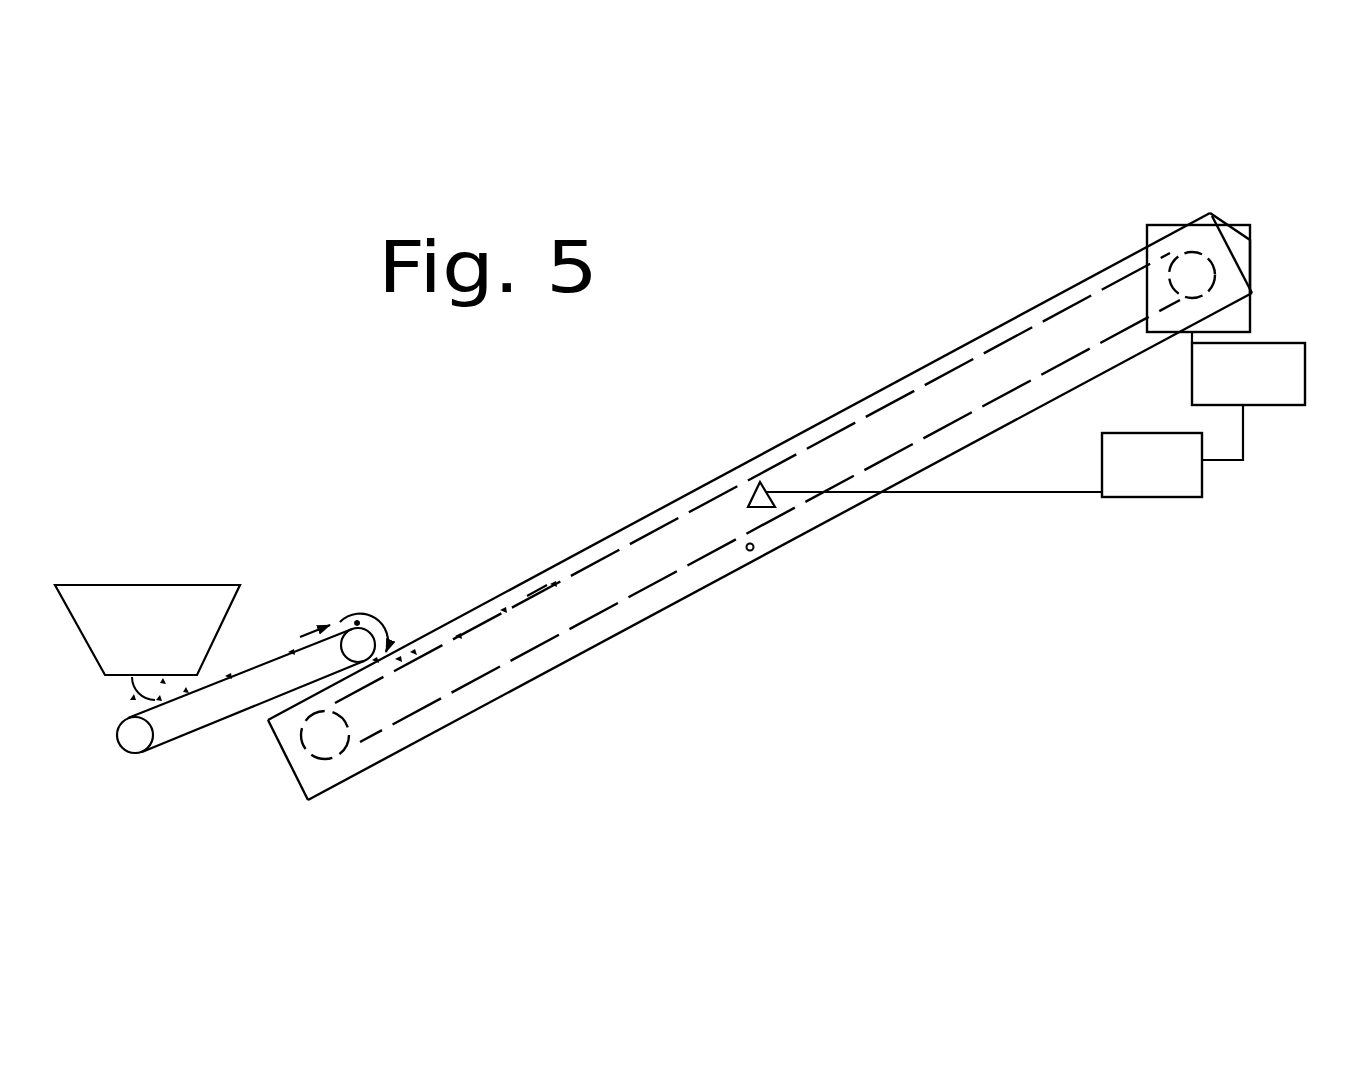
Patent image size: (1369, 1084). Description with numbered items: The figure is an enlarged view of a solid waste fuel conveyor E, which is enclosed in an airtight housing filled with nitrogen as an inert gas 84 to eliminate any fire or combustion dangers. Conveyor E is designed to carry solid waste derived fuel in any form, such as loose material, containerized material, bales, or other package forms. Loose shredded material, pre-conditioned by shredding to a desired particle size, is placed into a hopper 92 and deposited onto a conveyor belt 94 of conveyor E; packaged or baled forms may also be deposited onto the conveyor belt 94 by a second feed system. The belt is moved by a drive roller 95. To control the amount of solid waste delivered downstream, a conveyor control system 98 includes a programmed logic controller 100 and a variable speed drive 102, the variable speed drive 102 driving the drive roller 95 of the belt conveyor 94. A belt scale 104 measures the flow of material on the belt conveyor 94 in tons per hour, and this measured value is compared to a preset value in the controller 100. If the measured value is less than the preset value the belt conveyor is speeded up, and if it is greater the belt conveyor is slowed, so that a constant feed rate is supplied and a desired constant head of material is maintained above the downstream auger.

The inert gas 84 is at (750, 551).
The hopper 92 is at (175, 585).
The conveyor belt 94 is at (500, 672).
The drive roller 95 is at (1192, 303).
The conveyor control system 98 is at (1064, 454).
The programmed logic controller 100 is at (1145, 492).
The variable speed drive 102 is at (1268, 405).
The belt scale 104 is at (755, 485).
The solid waste fuel conveyor E is at (937, 338).